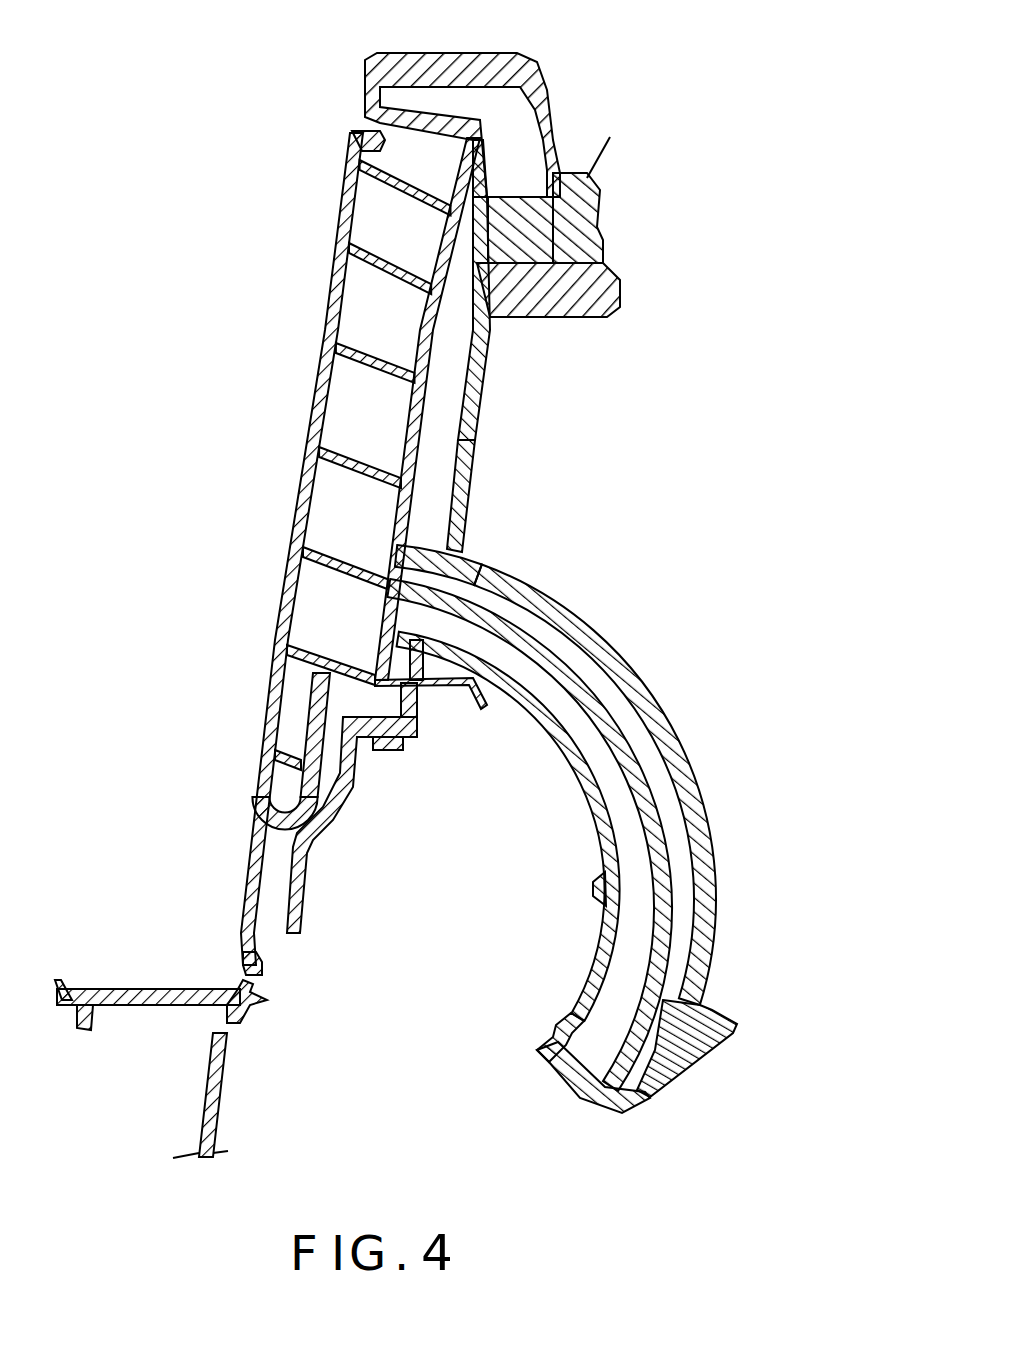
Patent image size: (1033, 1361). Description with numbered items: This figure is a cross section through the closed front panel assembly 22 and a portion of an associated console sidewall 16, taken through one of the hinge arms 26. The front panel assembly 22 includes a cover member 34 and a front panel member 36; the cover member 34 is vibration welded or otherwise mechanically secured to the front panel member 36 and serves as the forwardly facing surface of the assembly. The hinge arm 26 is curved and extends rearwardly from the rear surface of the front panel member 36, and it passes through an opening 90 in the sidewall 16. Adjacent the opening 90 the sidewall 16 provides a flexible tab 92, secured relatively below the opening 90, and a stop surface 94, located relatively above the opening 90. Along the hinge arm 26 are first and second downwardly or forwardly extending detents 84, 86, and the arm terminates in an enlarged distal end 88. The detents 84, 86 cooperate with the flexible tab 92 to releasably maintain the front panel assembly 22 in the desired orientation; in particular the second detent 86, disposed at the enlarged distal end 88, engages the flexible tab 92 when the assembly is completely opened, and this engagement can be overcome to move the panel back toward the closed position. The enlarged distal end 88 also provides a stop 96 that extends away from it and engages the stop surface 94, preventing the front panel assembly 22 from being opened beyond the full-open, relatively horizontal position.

The console sidewall 16 is at (480, 377).
The front panel assembly 22 is at (280, 247).
The hinge arm 26 is at (617, 677).
The cover member 34 is at (250, 877).
The front panel member 36 is at (415, 443).
The first detent 84 is at (590, 893).
The second detent 86 is at (547, 1036).
The enlarged distal end 88 is at (623, 1108).
The opening 90 is at (460, 545).
The flexible tab 92 is at (490, 700).
The stop surface 94 is at (463, 523).
The stop 96 is at (727, 1020).